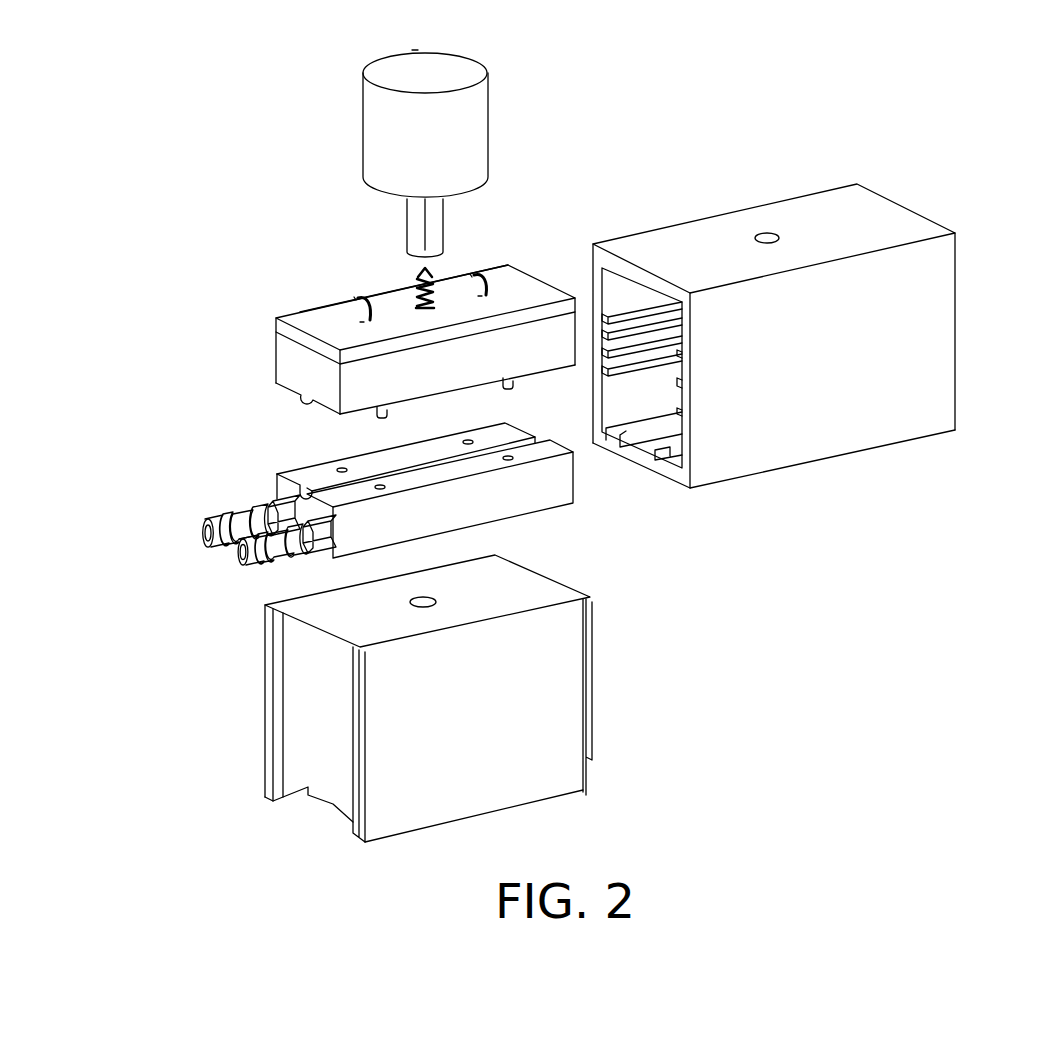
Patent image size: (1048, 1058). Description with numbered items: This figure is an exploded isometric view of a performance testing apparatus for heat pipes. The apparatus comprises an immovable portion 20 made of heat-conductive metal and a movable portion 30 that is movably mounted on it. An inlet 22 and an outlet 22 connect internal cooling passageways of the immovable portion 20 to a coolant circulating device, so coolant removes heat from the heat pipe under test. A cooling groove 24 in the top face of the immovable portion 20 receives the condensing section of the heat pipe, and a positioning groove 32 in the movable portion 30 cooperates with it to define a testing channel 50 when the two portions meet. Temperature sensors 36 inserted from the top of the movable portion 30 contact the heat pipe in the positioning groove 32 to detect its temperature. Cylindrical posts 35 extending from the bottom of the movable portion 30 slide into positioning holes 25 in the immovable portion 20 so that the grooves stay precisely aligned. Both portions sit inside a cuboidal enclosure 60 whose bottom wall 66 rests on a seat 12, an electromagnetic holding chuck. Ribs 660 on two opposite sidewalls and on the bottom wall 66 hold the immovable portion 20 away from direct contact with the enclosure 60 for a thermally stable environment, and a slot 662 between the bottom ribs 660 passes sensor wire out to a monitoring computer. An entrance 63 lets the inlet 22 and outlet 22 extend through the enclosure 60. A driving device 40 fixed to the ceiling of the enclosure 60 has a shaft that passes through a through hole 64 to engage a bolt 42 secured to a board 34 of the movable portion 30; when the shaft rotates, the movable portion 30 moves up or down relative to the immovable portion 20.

The seat 12 is at (558, 762).
The immovable portion 20 is at (381, 493).
The inlet and outlet 22 is at (240, 523).
The cooling groove 24 is at (312, 495).
The positioning holes 25 is at (508, 462).
The movable portion 30 is at (387, 332).
The positioning groove 32 is at (303, 392).
The board 34 is at (308, 316).
The cylindrical posts 35 is at (515, 383).
The temperature sensors 36 is at (353, 298).
The driving device 40 is at (404, 148).
The bolt 42 is at (413, 285).
The testing channel 50 is at (208, 383).
The enclosure 60 is at (801, 338).
The entrance 63 is at (627, 297).
The through hole 64 is at (762, 233).
The bottom wall 66 is at (608, 442).
The ribs 660 is at (680, 453).
The slot 662 is at (652, 442).